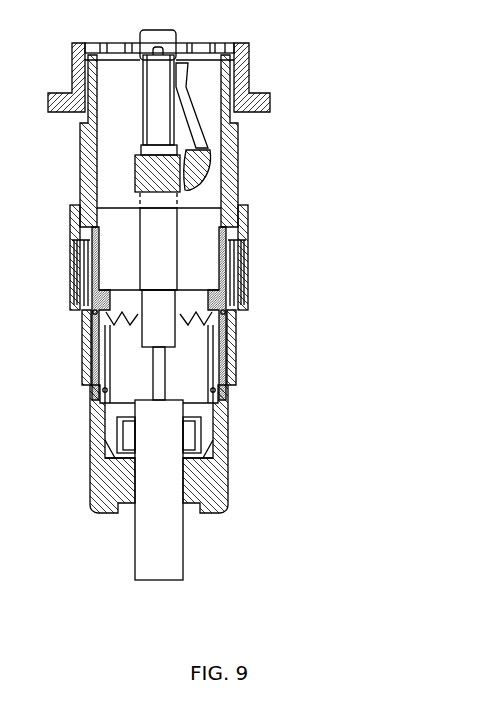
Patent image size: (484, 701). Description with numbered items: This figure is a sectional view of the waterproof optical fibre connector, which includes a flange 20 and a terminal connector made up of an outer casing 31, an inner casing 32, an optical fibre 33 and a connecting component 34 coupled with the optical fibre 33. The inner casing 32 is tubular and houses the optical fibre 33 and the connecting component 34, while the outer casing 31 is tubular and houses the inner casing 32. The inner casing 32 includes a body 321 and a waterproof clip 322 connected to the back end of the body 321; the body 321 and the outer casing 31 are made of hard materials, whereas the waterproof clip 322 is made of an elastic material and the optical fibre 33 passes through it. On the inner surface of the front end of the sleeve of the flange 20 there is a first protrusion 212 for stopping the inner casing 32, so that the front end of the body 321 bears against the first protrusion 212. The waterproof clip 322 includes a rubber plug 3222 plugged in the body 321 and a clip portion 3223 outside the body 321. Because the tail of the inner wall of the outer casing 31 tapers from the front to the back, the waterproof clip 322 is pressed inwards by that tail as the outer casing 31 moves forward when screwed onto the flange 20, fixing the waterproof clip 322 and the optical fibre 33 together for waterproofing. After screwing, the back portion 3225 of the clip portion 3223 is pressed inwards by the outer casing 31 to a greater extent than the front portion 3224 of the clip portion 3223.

The flange 20 is at (245, 60).
The first protrusion 212 is at (207, 50).
The outer casing 31 is at (237, 140).
The inner casing 32 is at (240, 252).
The body 321 is at (251, 223).
The waterproof clip 322 is at (239, 360).
The rubber plug 3222 is at (193, 365).
The clip portion 3223 is at (239, 407).
The front portion 3224 is at (210, 403).
The back portion 3225 is at (210, 426).
The optical fibre 33 is at (172, 533).
The connecting component 34 is at (163, 230).